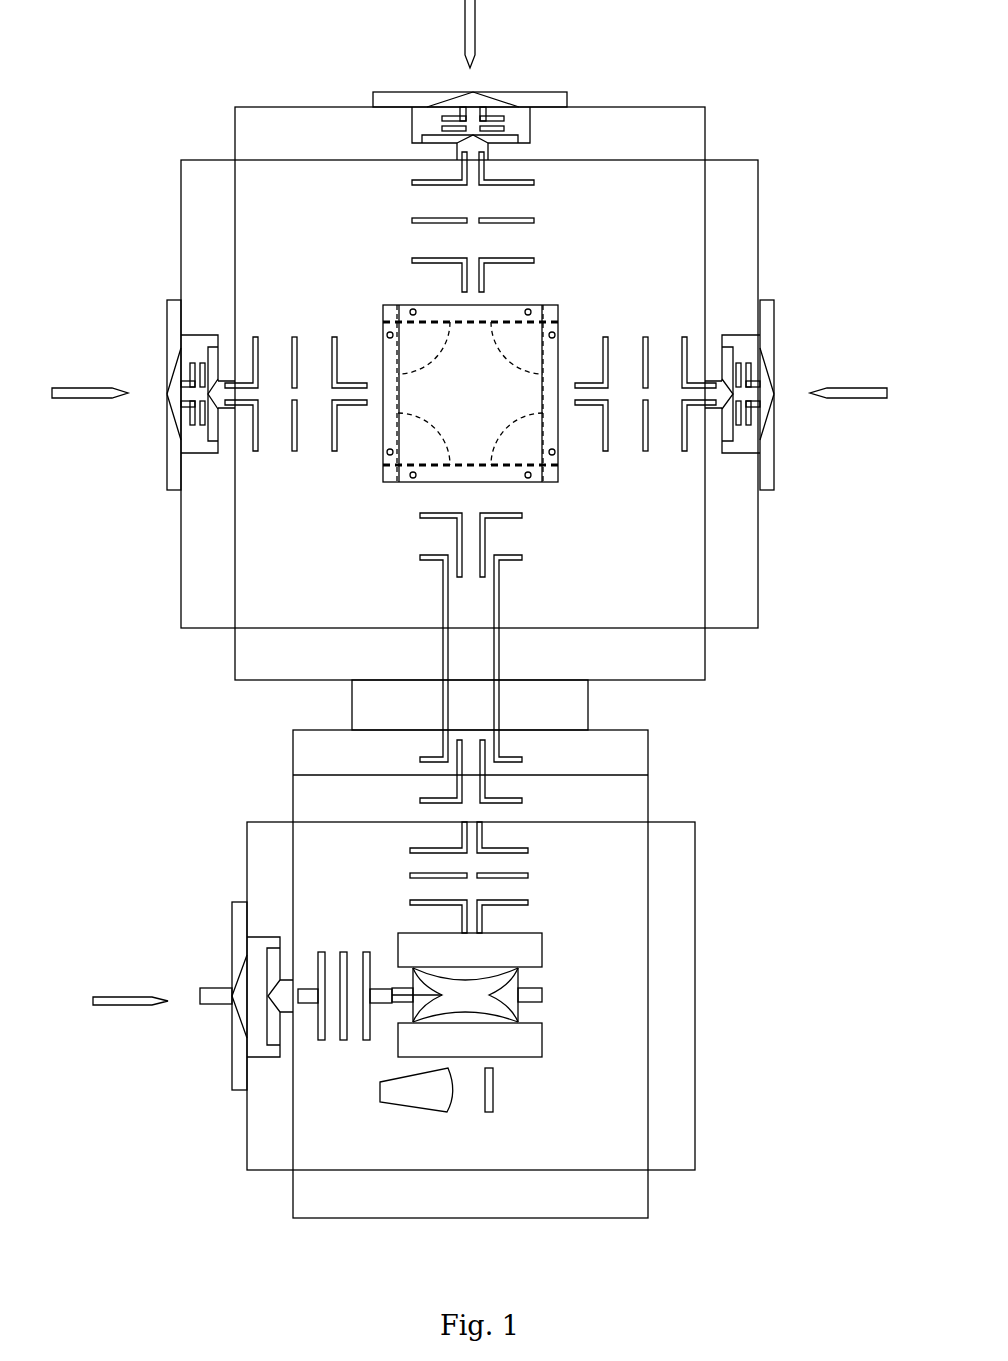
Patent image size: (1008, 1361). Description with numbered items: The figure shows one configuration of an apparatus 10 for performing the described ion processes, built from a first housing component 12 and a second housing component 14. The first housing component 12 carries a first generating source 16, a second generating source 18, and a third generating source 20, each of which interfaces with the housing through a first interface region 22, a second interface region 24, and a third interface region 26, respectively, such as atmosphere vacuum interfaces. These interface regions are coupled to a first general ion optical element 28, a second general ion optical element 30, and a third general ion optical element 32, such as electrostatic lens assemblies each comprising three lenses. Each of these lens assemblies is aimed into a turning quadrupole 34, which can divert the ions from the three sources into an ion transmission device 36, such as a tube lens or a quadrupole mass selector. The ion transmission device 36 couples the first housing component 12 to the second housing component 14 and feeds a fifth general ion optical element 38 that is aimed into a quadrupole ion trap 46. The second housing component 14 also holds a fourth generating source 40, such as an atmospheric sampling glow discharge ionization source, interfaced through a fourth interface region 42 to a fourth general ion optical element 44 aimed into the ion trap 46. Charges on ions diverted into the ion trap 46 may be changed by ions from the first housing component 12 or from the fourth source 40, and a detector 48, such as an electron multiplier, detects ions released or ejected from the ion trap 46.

The apparatus 10 is at (725, 93).
The first housing component 12 is at (165, 155).
The second housing component 14 is at (210, 833).
The first generating source 16 is at (83, 388).
The second generating source 18 is at (477, 27).
The third generating source 20 is at (853, 388).
The first interface region 22 is at (155, 442).
The second interface region 24 is at (408, 82).
The third interface region 26 is at (790, 447).
The first general ion optical element 28 is at (293, 462).
The second general ion optical element 30 is at (545, 220).
The third general ion optical element 32 is at (645, 320).
The turning quadrupole 34 is at (293, 323).
The ion transmission device 36 is at (505, 613).
The fifth general ion optical element 38 is at (537, 876).
The fourth generating source 40 is at (118, 997).
The fourth interface region 42 is at (217, 1050).
The fourth general ion optical element 44 is at (345, 947).
The quadrupole ion trap 46 is at (555, 997).
The detector 48 is at (390, 1107).